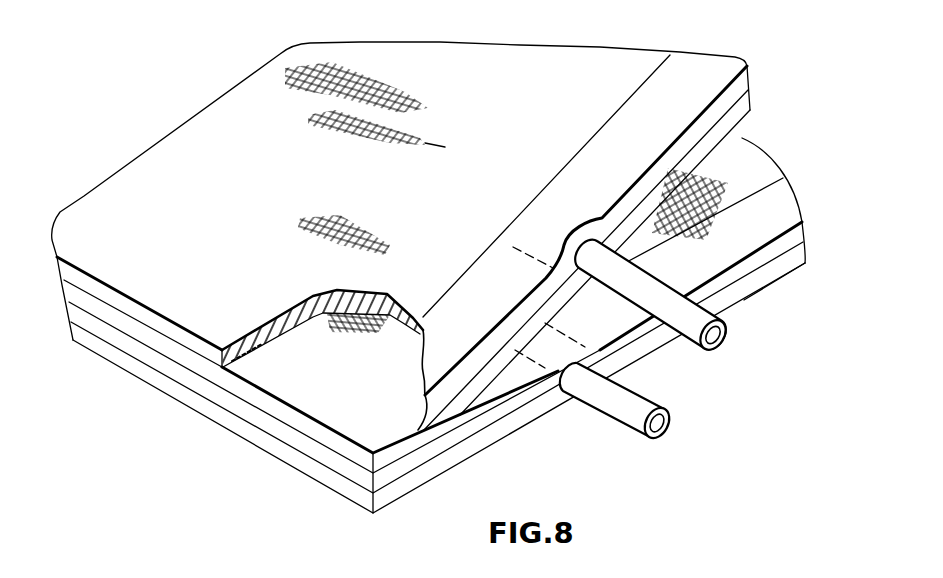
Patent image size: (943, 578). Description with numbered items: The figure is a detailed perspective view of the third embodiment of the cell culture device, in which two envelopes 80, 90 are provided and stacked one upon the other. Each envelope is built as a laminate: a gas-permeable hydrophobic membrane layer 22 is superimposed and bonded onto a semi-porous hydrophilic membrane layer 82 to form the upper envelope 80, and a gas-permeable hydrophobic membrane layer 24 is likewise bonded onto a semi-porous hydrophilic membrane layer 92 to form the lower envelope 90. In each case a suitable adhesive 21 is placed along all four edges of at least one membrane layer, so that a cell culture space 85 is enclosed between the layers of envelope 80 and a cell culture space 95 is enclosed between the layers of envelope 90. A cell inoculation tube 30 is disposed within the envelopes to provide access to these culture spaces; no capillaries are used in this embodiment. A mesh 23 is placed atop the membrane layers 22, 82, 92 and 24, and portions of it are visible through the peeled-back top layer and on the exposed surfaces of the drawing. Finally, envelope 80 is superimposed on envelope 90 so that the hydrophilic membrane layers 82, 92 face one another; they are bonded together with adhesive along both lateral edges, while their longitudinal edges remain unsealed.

The adhesive 21 is at (227, 372).
The gas-permeable hydrophobic membrane layer 22 is at (710, 85).
The mesh 23 is at (340, 68).
The gas-permeable hydrophobic membrane layer 24 is at (787, 265).
The cell inoculation tube 30 is at (722, 314).
The envelope 80 is at (762, 95).
The semi-porous hydrophilic membrane layer 82 is at (732, 122).
The cell culture space 85 is at (277, 378).
The envelope 90 is at (826, 212).
The semi-porous hydrophilic membrane layer 92 is at (787, 223).
The cell culture space 95 is at (290, 448).